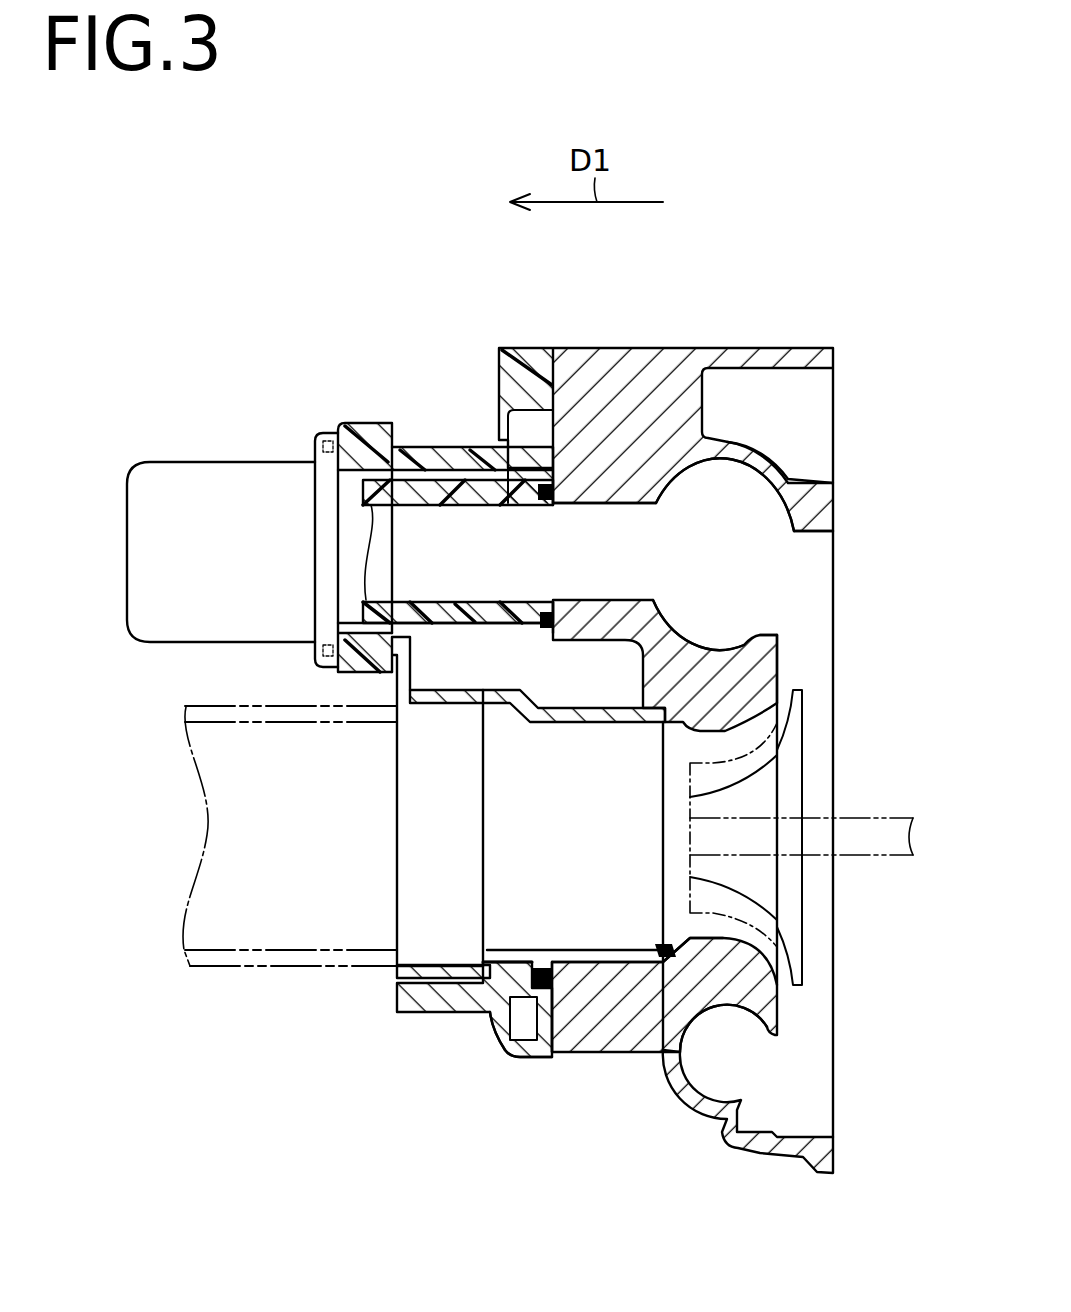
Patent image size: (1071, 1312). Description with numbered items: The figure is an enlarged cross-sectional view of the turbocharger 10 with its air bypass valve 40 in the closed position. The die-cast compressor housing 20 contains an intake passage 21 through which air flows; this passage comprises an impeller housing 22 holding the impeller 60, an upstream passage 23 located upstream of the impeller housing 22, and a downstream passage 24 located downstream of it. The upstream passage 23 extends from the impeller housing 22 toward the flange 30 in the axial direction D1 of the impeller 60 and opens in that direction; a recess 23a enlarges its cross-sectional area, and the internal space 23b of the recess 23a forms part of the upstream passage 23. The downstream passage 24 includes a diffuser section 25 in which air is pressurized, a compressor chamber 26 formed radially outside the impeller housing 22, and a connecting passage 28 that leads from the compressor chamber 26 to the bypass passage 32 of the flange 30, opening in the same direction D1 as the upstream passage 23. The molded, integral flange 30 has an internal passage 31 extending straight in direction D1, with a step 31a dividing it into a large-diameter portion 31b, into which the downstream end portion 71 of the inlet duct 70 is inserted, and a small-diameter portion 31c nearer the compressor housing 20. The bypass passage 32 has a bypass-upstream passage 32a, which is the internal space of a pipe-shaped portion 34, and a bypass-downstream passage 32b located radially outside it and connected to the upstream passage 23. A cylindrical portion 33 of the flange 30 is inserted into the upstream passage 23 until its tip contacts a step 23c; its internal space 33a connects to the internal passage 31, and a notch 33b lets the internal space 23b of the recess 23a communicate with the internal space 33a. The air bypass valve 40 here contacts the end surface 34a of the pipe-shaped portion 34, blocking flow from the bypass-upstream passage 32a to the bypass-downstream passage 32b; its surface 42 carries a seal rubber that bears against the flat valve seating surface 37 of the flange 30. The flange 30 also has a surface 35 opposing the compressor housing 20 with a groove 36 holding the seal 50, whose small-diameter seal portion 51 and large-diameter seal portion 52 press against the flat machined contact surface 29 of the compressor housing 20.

The turbocharger 10 is at (885, 318).
The compressor housing 20 is at (793, 345).
The intake passage 21 is at (683, 925).
The impeller housing 22 is at (728, 945).
The upstream passage 23 is at (617, 957).
The recess 23a is at (620, 645).
The internal space 23b is at (580, 701).
The step 23c is at (665, 950).
The downstream passage 24 is at (817, 624).
The diffuser section 25 is at (778, 658).
The compressor chamber 26 is at (715, 474).
The connecting passage 28 is at (620, 512).
The contact surface 29 is at (538, 356).
The flange 30 is at (508, 348).
The internal passage 31 is at (505, 943).
The step 31a is at (483, 962).
The large-diameter portion 31b is at (398, 1013).
The small-diameter portion 31c is at (530, 945).
The bypass passage 32 is at (488, 443).
The bypass-upstream passage 32a is at (418, 507).
The bypass-downstream passage 32b is at (470, 630).
The cylindrical portion 33 is at (650, 960).
The internal space 33a is at (588, 945).
The notch 33b is at (587, 714).
The pipe-shaped portion 34 is at (437, 614).
The end surface 34a is at (370, 495).
The surface 35 is at (573, 356).
The groove 36 is at (535, 1018).
The valve seating surface 37 is at (320, 445).
The air bypass valve 40 is at (195, 450).
The surface 42 is at (348, 432).
The seal 50 is at (540, 628).
The small-diameter seal portion 51 is at (540, 494).
The large-diameter seal portion 52 is at (540, 966).
The impeller 60 is at (790, 802).
The inlet duct 70 is at (253, 953).
The downstream end portion 71 is at (405, 952).